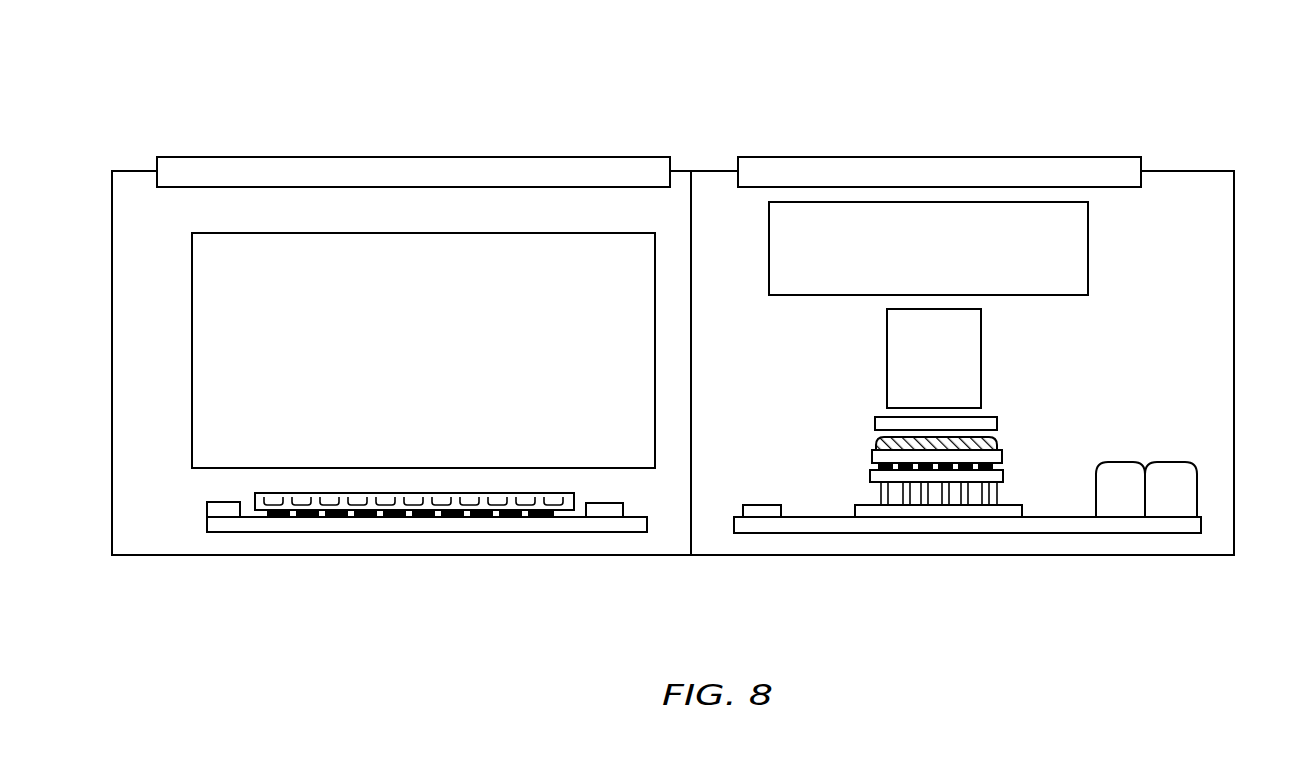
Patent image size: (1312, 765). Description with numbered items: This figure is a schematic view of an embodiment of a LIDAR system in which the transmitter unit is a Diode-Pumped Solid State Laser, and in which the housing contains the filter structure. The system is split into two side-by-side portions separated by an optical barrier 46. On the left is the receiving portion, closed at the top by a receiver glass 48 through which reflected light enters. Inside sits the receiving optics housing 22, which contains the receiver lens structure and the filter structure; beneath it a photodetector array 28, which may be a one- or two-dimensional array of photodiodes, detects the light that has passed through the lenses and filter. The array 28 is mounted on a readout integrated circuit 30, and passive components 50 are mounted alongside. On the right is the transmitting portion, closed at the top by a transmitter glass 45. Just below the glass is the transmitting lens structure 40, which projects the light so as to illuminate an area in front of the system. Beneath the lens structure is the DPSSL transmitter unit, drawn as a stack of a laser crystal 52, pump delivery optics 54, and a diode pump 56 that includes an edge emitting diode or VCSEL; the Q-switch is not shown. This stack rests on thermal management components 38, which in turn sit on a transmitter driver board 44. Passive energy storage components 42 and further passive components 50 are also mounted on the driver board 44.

The receiver glass 48 is at (198, 165).
The transmitter glass 45 is at (1080, 165).
The optical barrier 46 is at (692, 250).
The receiving optics housing 22 is at (207, 357).
The photodetector array 28 is at (255, 497).
The readout integrated circuit 30 is at (280, 533).
The passive components 50 is at (615, 533).
The transmitting lens structure 40 is at (1088, 248).
The laser crystal 52 is at (981, 358).
The pump delivery optics 54 is at (997, 423).
The diode pump 56 is at (964, 448).
The thermal management components 38 is at (880, 493).
The passive energy storage components 42 is at (1197, 498).
The transmitter driver board 44 is at (973, 537).